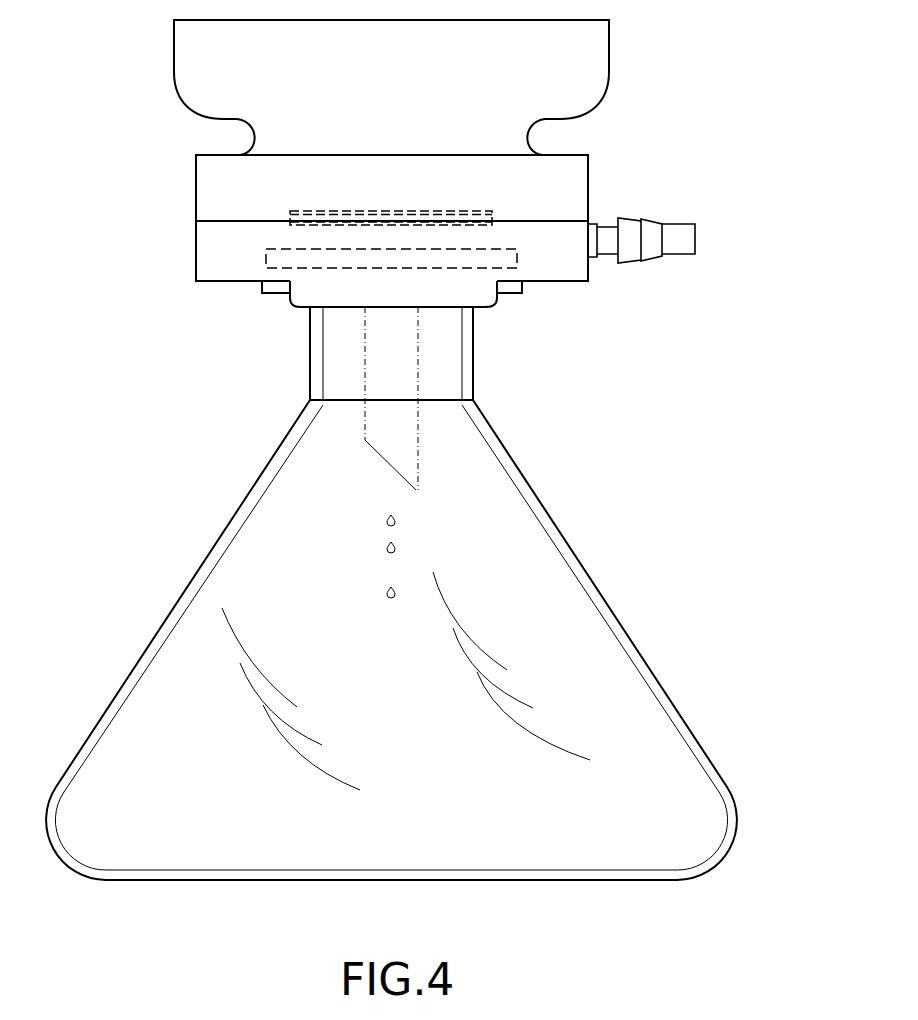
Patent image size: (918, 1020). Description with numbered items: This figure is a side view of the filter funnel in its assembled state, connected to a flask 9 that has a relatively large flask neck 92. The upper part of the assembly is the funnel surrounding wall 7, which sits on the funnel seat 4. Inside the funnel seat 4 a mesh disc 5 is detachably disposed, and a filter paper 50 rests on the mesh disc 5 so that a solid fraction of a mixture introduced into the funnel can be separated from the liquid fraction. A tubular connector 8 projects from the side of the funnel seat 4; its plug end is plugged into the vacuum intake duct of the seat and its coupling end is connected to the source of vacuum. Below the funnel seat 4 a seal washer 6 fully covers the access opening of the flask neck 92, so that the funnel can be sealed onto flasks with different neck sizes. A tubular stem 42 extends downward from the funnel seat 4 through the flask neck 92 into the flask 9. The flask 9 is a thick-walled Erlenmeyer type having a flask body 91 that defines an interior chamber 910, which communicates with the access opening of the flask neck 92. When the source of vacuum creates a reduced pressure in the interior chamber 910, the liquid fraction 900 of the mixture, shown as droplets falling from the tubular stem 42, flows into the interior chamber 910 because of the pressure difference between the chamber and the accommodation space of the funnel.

The funnel surrounding wall 7 is at (624, 58).
The funnel seat 4 is at (173, 244).
The filter paper 50 is at (478, 212).
The mesh disc 5 is at (490, 224).
The seal washer 6 is at (478, 270).
The tubular connector 8 is at (678, 232).
The flask neck 92 is at (310, 330).
The tubular stem 42 is at (365, 357).
The flask 9 is at (578, 468).
The flask body 91 is at (553, 528).
The interior chamber 910 is at (583, 650).
The liquid fraction 900 is at (388, 512).